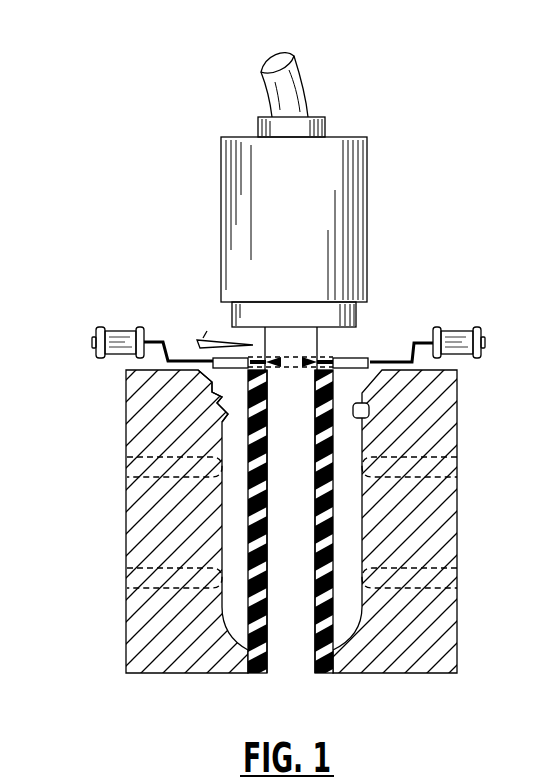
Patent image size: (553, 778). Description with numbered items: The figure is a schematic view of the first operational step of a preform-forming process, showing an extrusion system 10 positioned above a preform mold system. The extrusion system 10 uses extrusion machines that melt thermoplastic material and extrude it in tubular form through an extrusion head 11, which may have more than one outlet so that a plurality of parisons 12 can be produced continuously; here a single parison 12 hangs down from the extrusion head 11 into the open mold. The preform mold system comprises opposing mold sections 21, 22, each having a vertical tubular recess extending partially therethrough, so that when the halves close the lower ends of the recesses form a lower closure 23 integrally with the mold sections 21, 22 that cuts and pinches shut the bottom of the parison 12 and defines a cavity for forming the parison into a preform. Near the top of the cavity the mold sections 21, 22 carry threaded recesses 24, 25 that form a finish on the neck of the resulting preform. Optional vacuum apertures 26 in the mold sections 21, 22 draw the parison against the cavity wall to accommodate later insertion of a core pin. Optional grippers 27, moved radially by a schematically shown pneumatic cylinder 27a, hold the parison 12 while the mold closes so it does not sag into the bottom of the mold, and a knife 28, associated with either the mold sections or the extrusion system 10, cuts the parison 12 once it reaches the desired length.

The extrusion system 10 is at (380, 211).
The extrusion head 11 is at (357, 313).
The parison 12 is at (295, 615).
The mold section 21 is at (182, 655).
The mold section 22 is at (425, 658).
The lower closure section 23 is at (251, 673).
The threaded recess 24 is at (217, 412).
The threaded recess 25 is at (371, 402).
The vacuum aperture 26 is at (140, 472).
The gripper 27 is at (211, 360).
The pneumatic cylinder 27a is at (457, 333).
The knife 28 is at (227, 340).